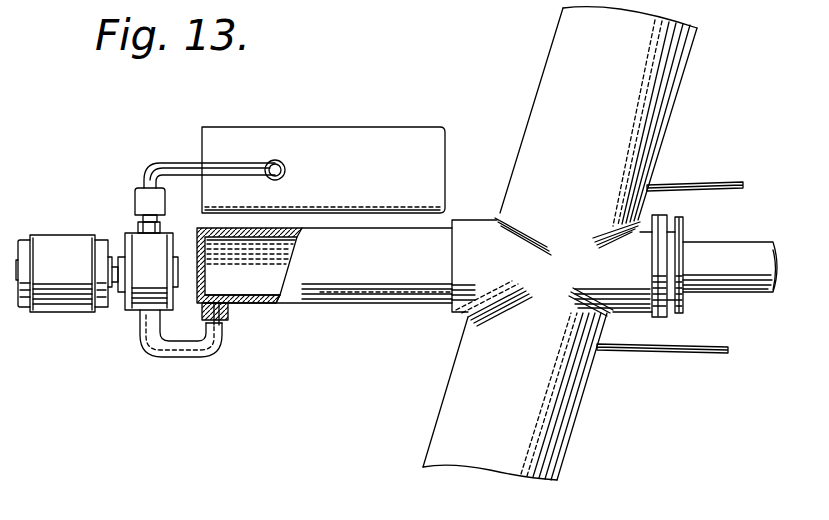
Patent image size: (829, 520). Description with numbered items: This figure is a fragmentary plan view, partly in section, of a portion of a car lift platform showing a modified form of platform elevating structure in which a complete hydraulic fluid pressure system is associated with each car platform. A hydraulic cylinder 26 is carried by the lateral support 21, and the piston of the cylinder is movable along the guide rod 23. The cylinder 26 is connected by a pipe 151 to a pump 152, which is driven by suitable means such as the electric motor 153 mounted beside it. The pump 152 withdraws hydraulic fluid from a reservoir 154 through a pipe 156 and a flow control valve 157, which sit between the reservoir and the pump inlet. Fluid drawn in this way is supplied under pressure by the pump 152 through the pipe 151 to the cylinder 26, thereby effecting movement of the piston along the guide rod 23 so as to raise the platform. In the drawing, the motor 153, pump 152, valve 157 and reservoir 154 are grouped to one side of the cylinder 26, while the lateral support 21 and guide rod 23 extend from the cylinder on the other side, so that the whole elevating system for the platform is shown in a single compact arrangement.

The lateral support 21 is at (630, 100).
The guide rod 23 is at (737, 248).
The hydraulic cylinder 26 is at (318, 288).
The pipe 151 is at (187, 346).
The pump 152 is at (143, 292).
The electric motor 153 is at (67, 245).
The reservoir 154 is at (367, 137).
The pipe 156 is at (183, 167).
The flow control valve 157 is at (147, 193).